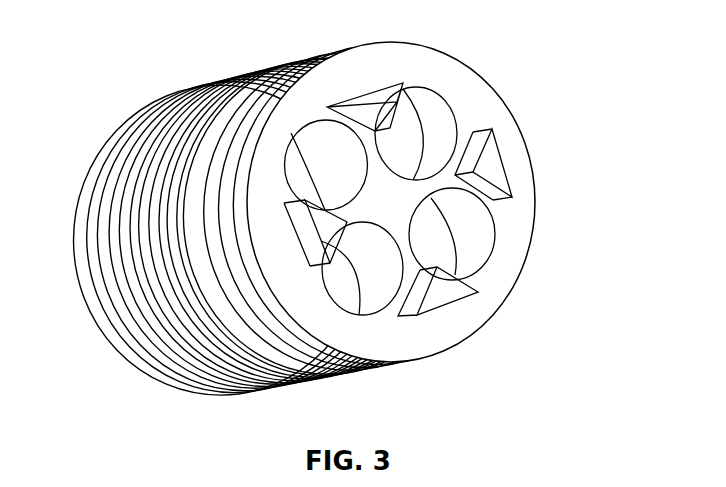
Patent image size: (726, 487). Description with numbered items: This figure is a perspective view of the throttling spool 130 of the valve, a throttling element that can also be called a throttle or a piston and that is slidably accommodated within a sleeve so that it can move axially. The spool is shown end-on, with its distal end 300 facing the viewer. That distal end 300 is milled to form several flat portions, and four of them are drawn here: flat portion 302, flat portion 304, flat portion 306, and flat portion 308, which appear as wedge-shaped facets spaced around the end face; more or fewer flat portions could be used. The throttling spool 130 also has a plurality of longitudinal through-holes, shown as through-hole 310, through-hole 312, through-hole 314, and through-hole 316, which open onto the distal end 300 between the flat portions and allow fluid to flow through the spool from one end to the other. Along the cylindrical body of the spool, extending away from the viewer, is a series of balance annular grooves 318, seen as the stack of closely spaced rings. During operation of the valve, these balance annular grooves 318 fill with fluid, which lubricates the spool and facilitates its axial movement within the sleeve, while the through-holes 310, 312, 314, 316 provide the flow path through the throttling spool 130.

The throttling spool 130 is at (103, 88).
The distal end 300 is at (521, 117).
The flat portion 302 is at (373, 100).
The flat portion 304 is at (491, 162).
The flat portion 306 is at (440, 293).
The flat portion 308 is at (370, 288).
The through-hole 310 is at (426, 115).
The through-hole 312 is at (460, 231).
The through-hole 314 is at (340, 352).
The through-hole 316 is at (293, 136).
The balance annular grooves 318 is at (181, 131).